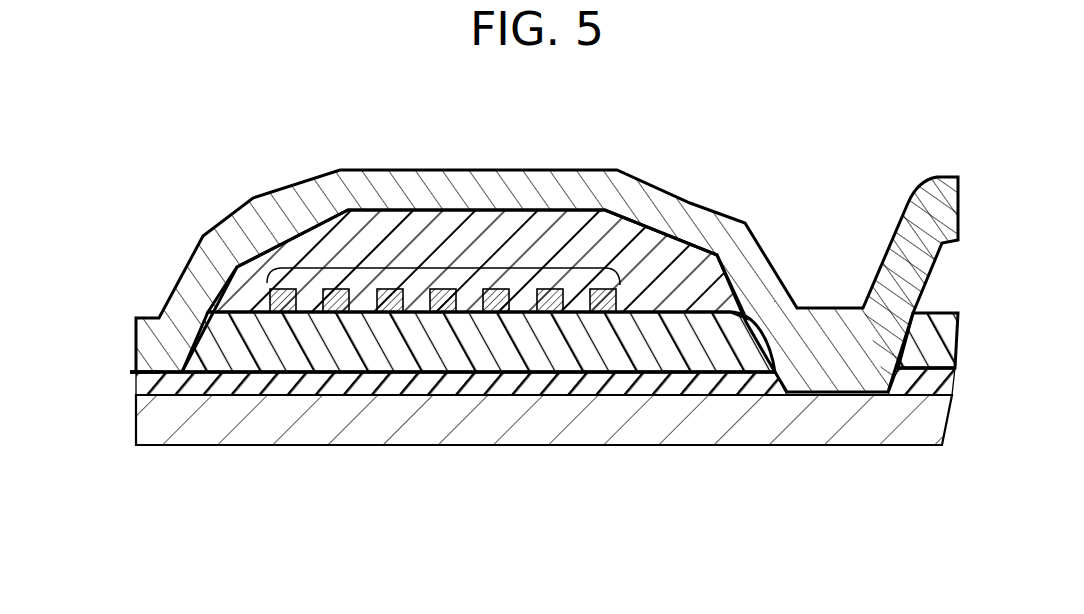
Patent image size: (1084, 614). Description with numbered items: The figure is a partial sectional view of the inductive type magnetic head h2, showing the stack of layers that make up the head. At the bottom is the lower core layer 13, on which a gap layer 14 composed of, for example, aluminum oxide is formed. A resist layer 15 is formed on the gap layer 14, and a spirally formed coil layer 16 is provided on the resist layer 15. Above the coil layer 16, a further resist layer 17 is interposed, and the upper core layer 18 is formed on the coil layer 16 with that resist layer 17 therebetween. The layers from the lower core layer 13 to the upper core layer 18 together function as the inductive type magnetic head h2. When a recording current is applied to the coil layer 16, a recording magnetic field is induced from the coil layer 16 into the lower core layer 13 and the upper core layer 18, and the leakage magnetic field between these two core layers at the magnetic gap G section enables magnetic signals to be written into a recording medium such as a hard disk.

The lower core layer 13 is at (207, 433).
The gap layer 14 is at (447, 385).
The resist layer 15 is at (325, 342).
The coil layer 16 is at (433, 267).
The resist layer 17 is at (525, 238).
The upper core layer 18 is at (657, 210).
The inductive type magnetic head h2 is at (253, 196).
The magnetic gap G is at (126, 374).